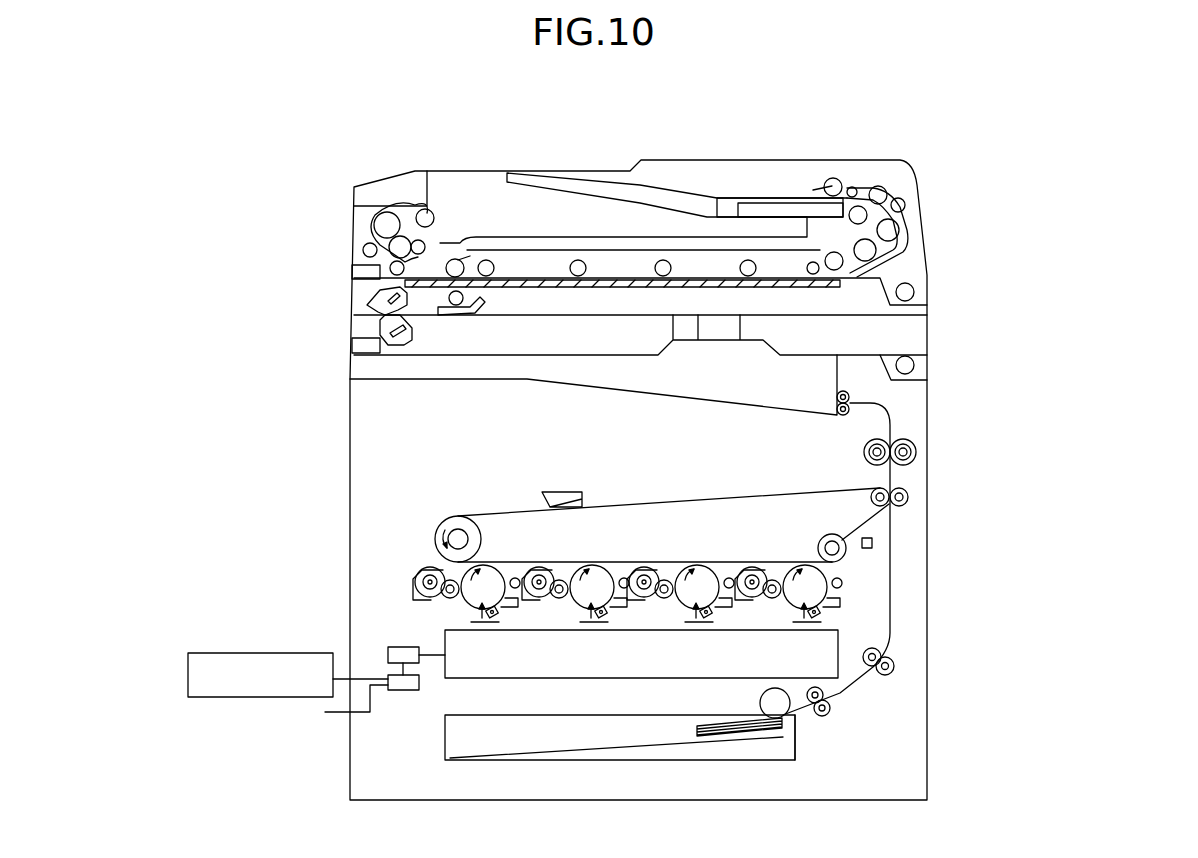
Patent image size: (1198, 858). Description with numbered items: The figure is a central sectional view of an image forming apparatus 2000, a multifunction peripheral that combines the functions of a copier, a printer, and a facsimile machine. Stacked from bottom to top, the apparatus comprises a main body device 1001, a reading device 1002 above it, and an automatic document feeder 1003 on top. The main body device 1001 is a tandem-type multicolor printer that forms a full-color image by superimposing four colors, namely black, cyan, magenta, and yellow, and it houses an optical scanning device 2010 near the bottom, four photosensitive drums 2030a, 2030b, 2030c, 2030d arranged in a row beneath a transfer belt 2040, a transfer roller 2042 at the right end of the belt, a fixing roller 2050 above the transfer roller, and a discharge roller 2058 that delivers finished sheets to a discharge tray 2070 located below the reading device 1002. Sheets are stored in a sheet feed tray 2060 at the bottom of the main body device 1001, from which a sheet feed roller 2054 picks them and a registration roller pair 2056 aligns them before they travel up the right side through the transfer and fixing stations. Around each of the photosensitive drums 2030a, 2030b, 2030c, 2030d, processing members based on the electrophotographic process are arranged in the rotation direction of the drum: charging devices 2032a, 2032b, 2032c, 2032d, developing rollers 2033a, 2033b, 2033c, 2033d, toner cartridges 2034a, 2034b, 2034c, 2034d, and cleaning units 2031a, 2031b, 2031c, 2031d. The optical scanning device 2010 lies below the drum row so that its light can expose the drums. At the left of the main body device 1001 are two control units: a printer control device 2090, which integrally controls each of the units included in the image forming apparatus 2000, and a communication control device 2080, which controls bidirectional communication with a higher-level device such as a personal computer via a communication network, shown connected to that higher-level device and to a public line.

The image forming apparatus 2000 is at (713, 134).
The main body device 1001 is at (589, 566).
The reading device 1002 is at (333, 331).
The automatic document feeder 1003 is at (333, 254).
The discharge tray 2070 is at (746, 398).
The discharge roller 2058 is at (850, 399).
The fixing roller 2050 is at (863, 455).
The transfer roller 2042 is at (910, 497).
The transfer belt 2040 is at (696, 496).
The photosensitive drum 2030a is at (787, 562).
The photosensitive drum 2030b is at (679, 562).
The photosensitive drum 2030c is at (570, 562).
The photosensitive drum 2030d is at (507, 562).
The toner cartridge 2034a is at (752, 566).
The toner cartridge 2034b is at (644, 566).
The toner cartridge 2034c is at (539, 566).
The toner cartridge 2034d is at (430, 566).
The developing roller 2033a is at (817, 621).
The developing roller 2033b is at (709, 621).
The developing roller 2033c is at (604, 621).
The developing roller 2033d is at (433, 596).
The charging device 2032a is at (818, 628).
The charging device 2032b is at (711, 628).
The charging device 2032c is at (606, 628).
The charging device 2032d is at (497, 628).
The cleaning unit 2031a is at (837, 604).
The cleaning unit 2031b is at (699, 622).
The cleaning unit 2031c is at (594, 622).
The cleaning unit 2031d is at (485, 622).
The optical scanning device 2010 is at (620, 737).
The sheet feed tray 2060 is at (797, 745).
The sheet feed roller 2054 is at (790, 715).
The registration roller pair 2056 is at (832, 704).
The printer control device 2090 is at (392, 647).
The communication control device 2080 is at (403, 691).